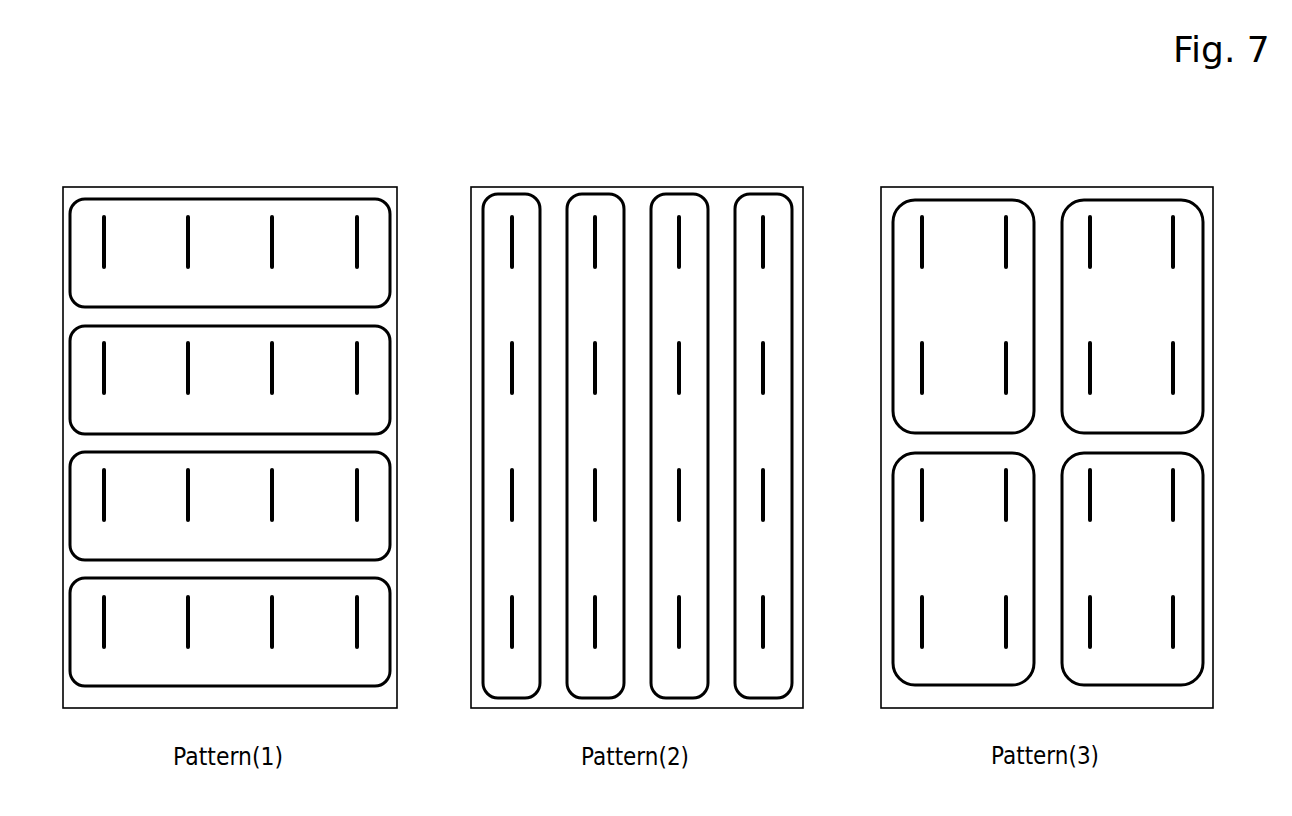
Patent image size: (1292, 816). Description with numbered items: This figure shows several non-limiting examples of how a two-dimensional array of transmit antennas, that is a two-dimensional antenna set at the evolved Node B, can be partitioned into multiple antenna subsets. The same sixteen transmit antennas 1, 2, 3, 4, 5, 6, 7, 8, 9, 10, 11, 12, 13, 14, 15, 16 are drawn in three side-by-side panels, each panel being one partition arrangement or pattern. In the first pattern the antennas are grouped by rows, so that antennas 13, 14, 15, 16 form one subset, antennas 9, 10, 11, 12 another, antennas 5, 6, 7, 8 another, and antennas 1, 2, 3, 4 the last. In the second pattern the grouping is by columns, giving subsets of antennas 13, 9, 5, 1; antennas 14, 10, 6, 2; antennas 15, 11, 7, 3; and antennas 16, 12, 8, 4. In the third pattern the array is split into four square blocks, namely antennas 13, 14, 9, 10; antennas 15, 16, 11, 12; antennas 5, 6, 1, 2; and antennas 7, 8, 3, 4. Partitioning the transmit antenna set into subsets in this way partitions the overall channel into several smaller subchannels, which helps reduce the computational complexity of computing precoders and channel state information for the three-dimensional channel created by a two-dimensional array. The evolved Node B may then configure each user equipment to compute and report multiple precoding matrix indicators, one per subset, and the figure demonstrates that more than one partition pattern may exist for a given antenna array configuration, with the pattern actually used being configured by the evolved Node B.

The region 1 is at (513, 638).
The region 2 is at (597, 638).
The region 3 is at (681, 638).
The region 4 is at (765, 638).
The region 5 is at (513, 511).
The region 6 is at (597, 511).
The region 7 is at (681, 511).
The region 8 is at (765, 511).
The region 9 is at (513, 385).
The region 10 is at (597, 385).
The region 11 is at (681, 385).
The region 12 is at (765, 385).
The region 13 is at (513, 258).
The region 14 is at (597, 258).
The region 15 is at (681, 258).
The region 16 is at (765, 258).